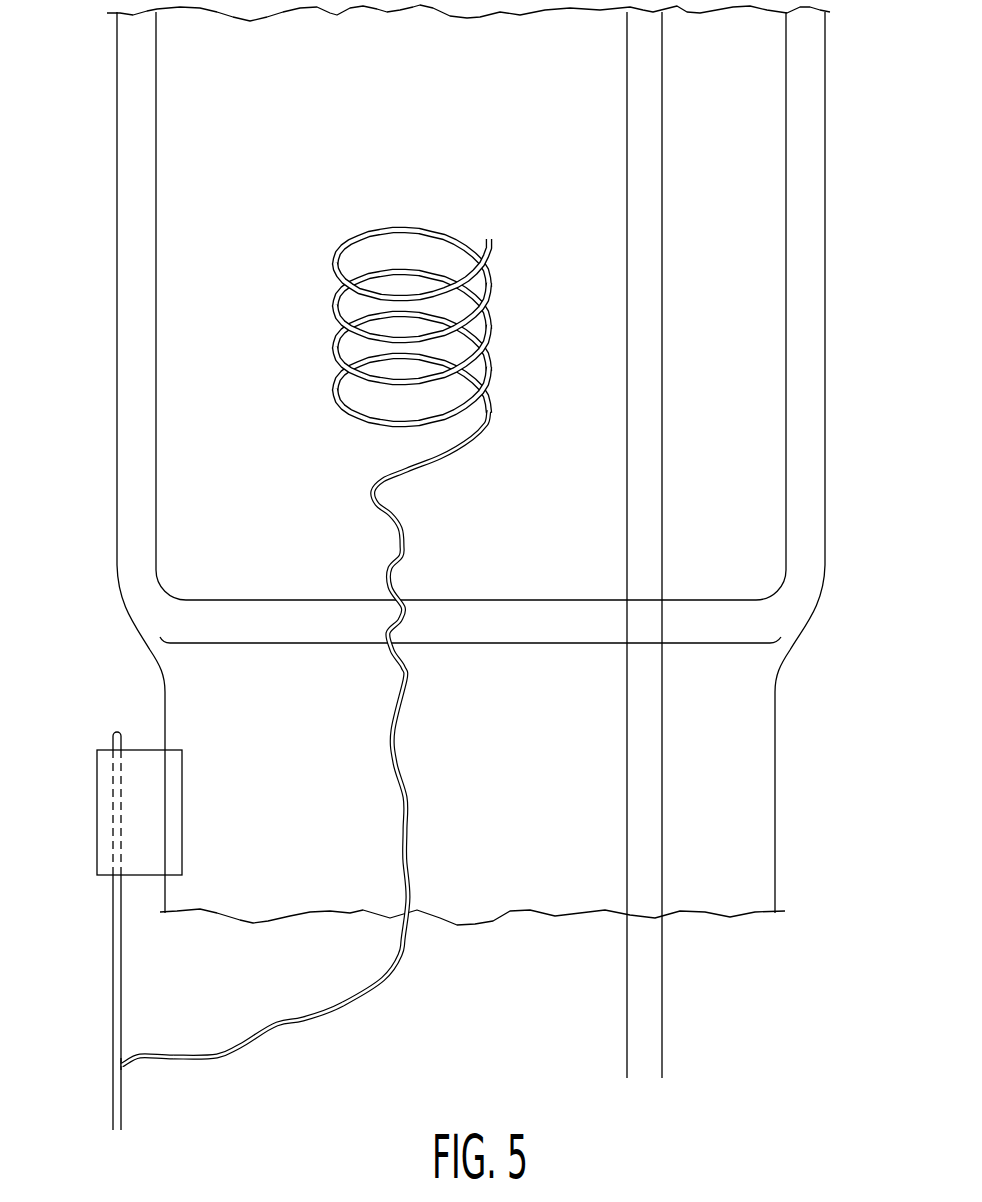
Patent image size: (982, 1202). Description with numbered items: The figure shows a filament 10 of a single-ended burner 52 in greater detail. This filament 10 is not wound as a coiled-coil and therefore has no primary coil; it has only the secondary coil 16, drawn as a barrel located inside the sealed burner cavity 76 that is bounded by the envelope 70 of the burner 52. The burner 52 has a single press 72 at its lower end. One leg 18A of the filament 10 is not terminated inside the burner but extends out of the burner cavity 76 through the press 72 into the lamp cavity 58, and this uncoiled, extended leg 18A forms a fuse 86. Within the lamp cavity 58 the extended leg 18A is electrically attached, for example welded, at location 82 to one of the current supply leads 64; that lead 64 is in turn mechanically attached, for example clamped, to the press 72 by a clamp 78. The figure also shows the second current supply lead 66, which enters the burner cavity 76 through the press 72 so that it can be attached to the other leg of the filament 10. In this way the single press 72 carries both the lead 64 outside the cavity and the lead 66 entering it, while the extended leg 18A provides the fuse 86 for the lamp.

The filament 10 is at (311, 311).
The secondary coil 16 is at (341, 246).
The leg 18A is at (397, 738).
The single-ended burner 52 is at (845, 316).
The lamp cavity 58 is at (100, 349).
The current supply lead 64 is at (113, 1027).
The second current supply lead 66 is at (650, 1012).
The envelope 70 is at (125, 167).
The press 72 is at (740, 758).
The burner cavity 76 is at (260, 519).
The clamp 78 is at (100, 866).
The attachment location 82 is at (130, 1050).
The fuse 86 is at (303, 1017).